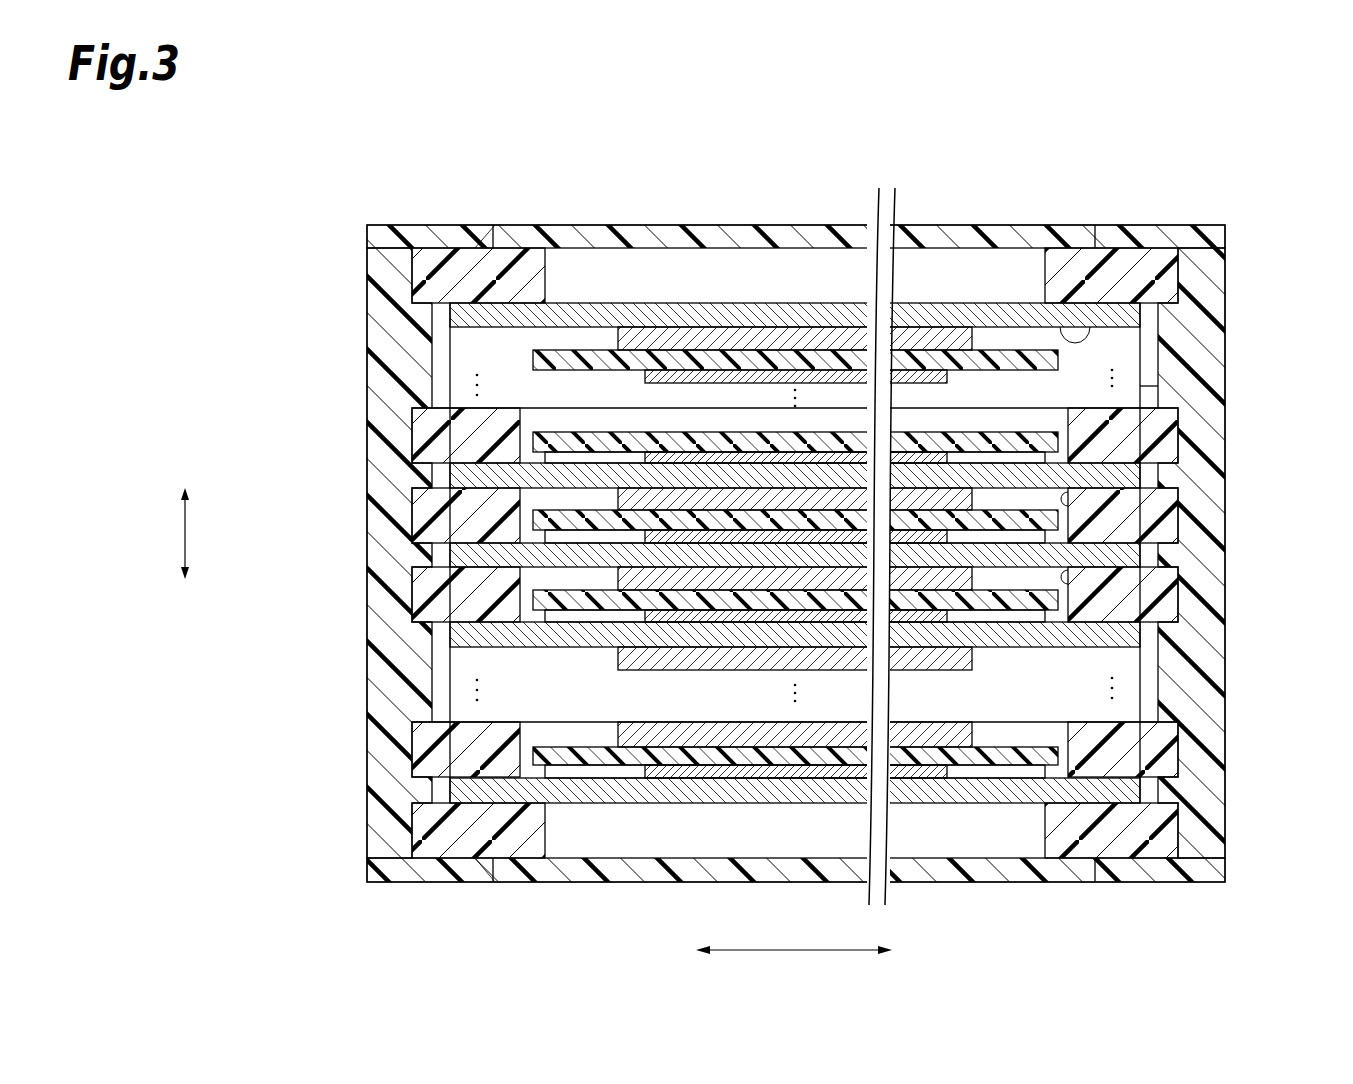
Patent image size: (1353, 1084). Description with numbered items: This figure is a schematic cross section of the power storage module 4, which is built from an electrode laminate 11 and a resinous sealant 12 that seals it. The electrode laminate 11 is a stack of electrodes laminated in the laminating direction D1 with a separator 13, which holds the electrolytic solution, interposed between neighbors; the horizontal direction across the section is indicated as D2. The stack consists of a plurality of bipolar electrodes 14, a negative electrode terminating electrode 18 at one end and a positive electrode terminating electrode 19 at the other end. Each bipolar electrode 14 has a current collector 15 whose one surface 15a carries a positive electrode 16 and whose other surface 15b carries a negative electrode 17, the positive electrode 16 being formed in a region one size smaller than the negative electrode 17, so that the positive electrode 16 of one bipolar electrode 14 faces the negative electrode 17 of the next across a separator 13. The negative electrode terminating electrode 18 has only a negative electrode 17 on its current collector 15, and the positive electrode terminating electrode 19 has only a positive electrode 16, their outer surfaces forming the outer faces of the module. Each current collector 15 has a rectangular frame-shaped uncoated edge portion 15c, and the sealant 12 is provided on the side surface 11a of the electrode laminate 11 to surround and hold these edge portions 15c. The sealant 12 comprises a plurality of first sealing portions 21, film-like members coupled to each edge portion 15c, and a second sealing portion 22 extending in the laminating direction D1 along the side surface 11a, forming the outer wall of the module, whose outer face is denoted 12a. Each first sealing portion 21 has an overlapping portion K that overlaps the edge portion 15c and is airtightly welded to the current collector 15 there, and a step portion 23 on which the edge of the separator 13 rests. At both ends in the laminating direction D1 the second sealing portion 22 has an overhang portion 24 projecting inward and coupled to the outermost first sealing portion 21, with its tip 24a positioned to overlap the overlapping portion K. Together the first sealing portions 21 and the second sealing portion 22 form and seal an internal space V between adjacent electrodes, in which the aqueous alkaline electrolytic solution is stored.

The power storage module 4 is at (384, 187).
The electrode laminate 11 is at (975, 238).
The side surface 11a is at (452, 386).
The sealant 12 is at (1224, 222).
The side wall 12a is at (1228, 746).
The separator 13 is at (1000, 378).
The bipolar electrode 14 is at (296, 408).
The current collector 15 is at (455, 313).
The one surface of the current collector 15a is at (1020, 305).
The other surface of the current collector 15b is at (1080, 336).
The edge portion of the current collector 15c is at (1100, 470).
The positive electrode 16 is at (535, 440).
The negative electrode 17 is at (628, 340).
The negative electrode terminating electrode 18 is at (286, 293).
The positive electrode terminating electrode 19 is at (286, 762).
The first sealing portion 21 is at (425, 270).
The second sealing portion 22 is at (390, 678).
The step portion 23 is at (528, 406).
The overhang portion 24 is at (445, 235).
The tip of the overhang portion 24a is at (495, 236).
The overlapping portion K is at (520, 314).
The internal space V is at (1120, 512).
The laminating direction D1 is at (152, 533).
The second direction D2 is at (794, 936).